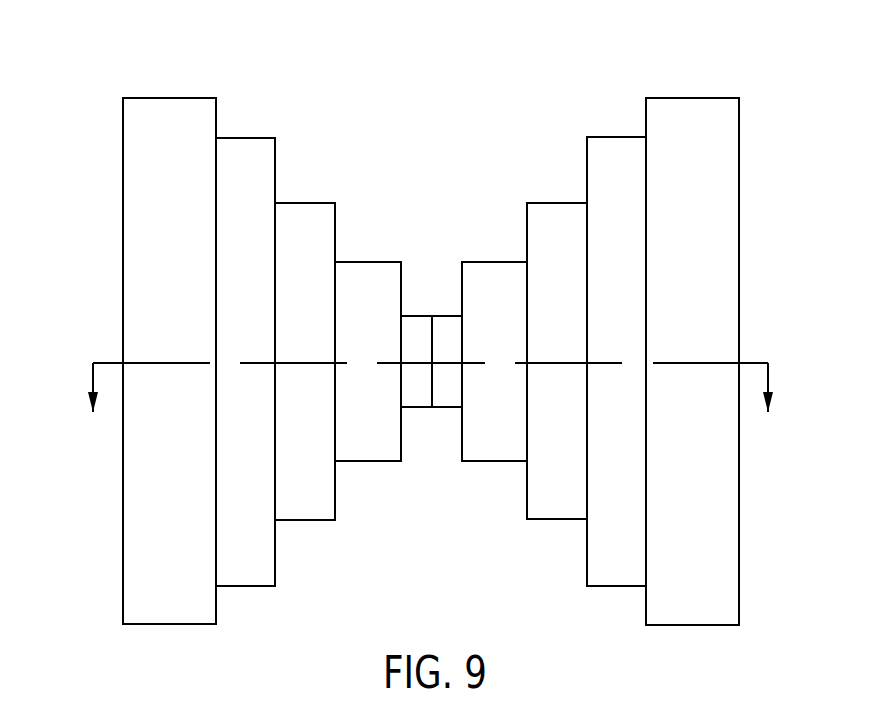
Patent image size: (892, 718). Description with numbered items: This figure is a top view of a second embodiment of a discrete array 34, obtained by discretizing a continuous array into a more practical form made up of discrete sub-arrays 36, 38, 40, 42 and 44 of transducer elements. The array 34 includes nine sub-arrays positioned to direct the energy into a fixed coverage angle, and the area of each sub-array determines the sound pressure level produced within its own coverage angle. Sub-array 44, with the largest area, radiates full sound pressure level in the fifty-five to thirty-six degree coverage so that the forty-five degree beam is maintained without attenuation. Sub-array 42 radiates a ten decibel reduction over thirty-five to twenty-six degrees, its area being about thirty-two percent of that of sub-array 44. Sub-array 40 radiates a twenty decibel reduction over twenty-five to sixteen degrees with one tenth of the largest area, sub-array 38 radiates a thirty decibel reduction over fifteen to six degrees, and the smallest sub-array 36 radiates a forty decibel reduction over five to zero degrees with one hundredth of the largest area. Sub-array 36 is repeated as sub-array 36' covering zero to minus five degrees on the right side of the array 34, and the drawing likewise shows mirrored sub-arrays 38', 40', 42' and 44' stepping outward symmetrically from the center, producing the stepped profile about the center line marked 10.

The section line 10- 10 is at (434, 406).
The array 34 is at (360, 117).
The sub-array 36 is at (421, 310).
The sub-array 36' is at (455, 460).
The sub-array 38 is at (472, 319).
The second section (opposite side) 38' is at (364, 417).
The sub-array 40 is at (526, 314).
The third section (opposite side) 40' is at (292, 416).
The sub-array 42 is at (588, 315).
The fourth section (opposite side) 42' is at (221, 411).
The sub-array 44 is at (671, 320).
The end section (opposite side) 44' is at (148, 390).